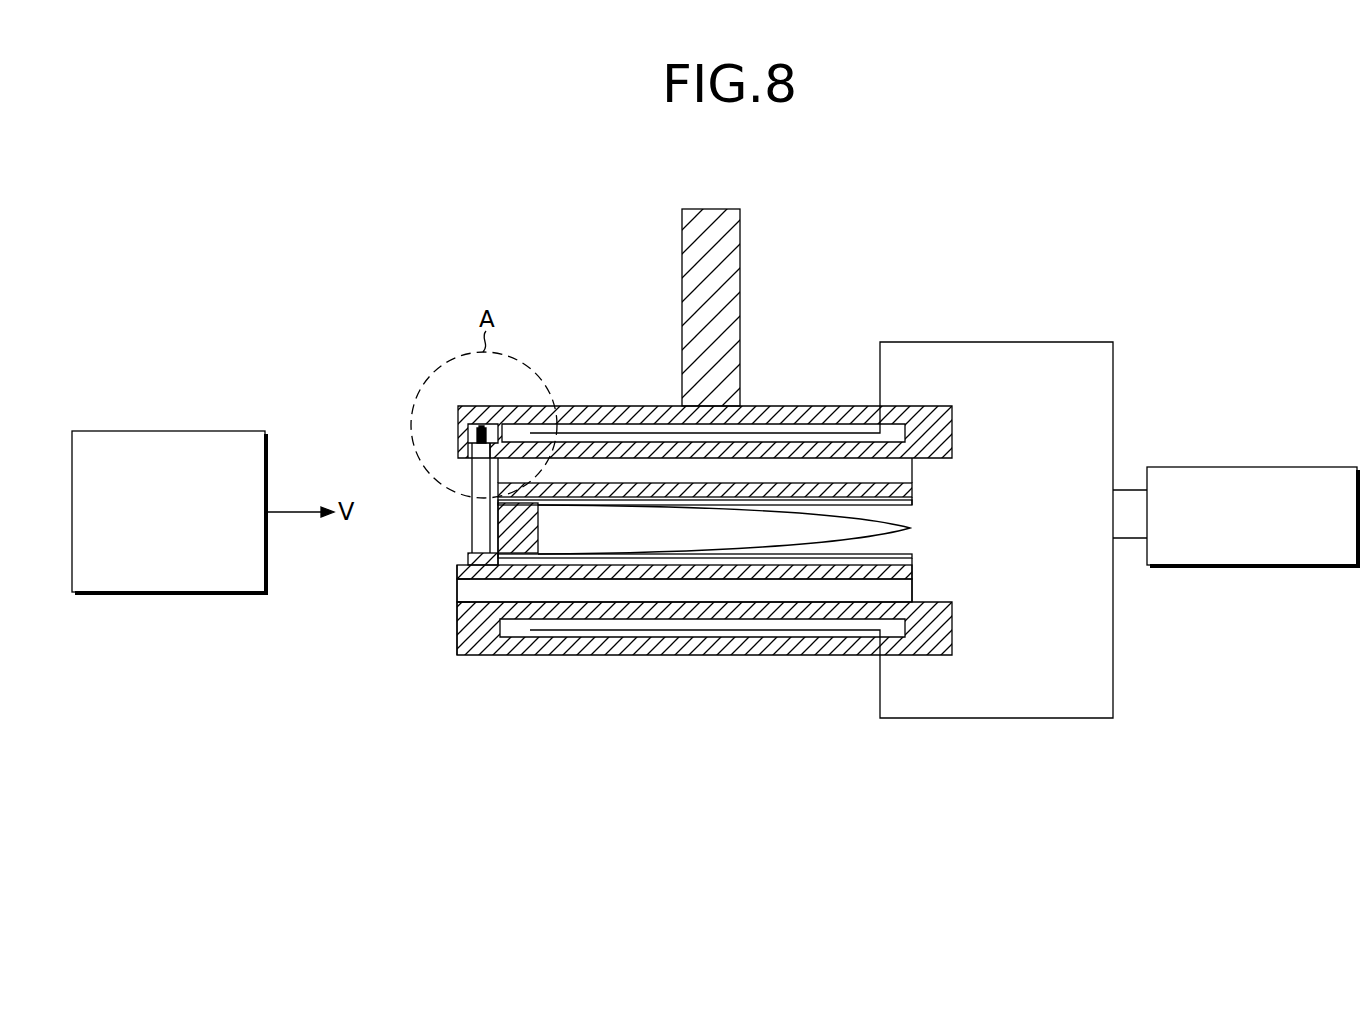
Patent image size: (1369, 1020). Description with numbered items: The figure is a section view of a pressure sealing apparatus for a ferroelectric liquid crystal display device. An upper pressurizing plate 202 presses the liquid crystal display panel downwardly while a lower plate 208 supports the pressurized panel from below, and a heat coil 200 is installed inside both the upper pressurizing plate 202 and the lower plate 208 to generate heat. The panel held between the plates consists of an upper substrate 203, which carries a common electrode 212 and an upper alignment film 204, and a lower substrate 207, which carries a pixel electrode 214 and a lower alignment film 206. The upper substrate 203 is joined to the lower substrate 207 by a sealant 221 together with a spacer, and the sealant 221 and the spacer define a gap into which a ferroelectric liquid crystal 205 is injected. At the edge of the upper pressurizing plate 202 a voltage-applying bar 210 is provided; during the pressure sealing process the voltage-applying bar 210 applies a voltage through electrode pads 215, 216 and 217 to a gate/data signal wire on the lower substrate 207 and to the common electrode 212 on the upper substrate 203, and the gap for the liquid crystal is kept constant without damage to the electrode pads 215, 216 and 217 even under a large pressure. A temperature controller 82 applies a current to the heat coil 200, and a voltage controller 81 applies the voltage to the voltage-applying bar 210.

The voltage controller 81 is at (232, 431).
The temperature controller 82 is at (1262, 467).
The heat coil 200 is at (760, 429).
The upper pressurizing plate 202 is at (942, 419).
The upper substrate 203 is at (900, 475).
The upper alignment film 204 is at (905, 505).
The ferroelectric liquid crystal 205 is at (908, 530).
The lower alignment film 206 is at (905, 560).
The lower substrate 207 is at (900, 597).
The lower plate 208 is at (943, 634).
The voltage-applying bar 210 is at (478, 545).
The common electrode 212 is at (903, 490).
The pixel electrode 214 is at (905, 577).
The electrode pad 215 is at (458, 577).
The electrode pad 216 is at (458, 577).
The electrode pad 217 is at (458, 577).
The sealant 221 is at (507, 525).